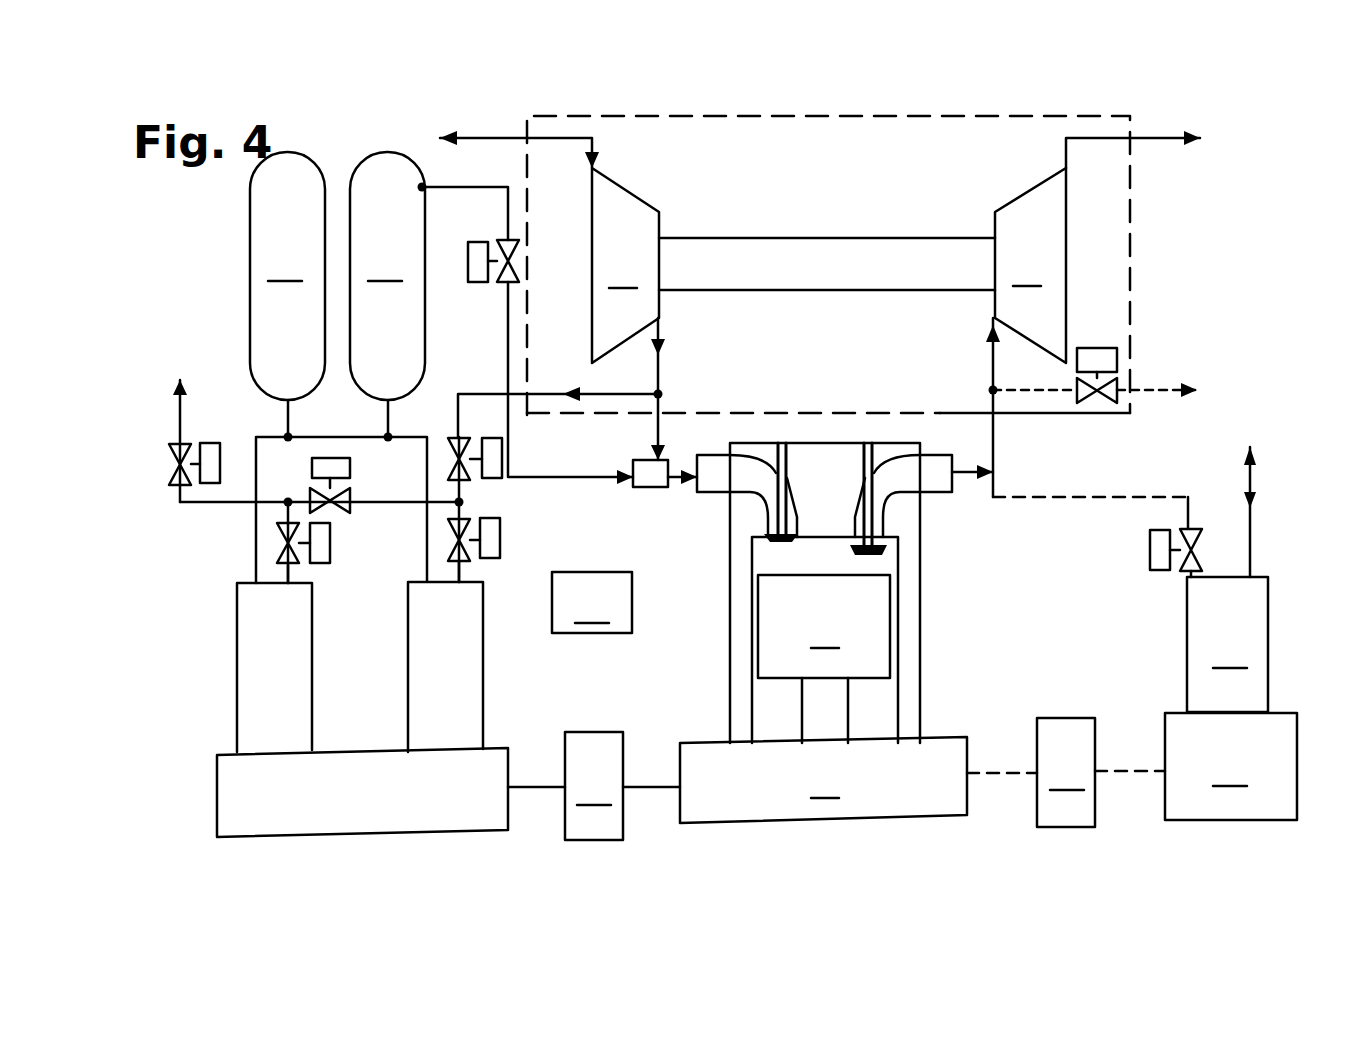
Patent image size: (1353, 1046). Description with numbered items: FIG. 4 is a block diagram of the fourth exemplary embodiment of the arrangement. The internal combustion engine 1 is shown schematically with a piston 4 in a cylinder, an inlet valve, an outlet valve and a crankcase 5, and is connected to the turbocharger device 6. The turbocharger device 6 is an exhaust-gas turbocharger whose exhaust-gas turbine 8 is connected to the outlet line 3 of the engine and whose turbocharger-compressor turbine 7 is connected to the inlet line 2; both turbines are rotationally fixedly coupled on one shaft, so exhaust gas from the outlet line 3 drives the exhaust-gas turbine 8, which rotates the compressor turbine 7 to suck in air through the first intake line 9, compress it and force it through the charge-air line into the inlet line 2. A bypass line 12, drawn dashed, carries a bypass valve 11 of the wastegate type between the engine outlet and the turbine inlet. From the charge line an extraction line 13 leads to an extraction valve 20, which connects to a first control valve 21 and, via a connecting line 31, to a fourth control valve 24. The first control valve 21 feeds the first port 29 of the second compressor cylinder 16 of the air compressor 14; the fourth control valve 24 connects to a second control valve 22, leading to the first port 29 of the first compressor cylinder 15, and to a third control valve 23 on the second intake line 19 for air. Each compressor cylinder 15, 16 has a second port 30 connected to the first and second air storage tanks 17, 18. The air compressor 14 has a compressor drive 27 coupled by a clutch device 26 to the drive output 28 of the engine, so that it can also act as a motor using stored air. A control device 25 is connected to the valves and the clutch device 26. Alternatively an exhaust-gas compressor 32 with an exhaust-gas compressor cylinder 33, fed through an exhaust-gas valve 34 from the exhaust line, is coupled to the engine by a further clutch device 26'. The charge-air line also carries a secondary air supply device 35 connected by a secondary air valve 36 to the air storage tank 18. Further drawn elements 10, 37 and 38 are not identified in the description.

The internal combustion engine 1 is at (920, 667).
The inlet line 2 is at (708, 493).
The outlet line 3 is at (940, 493).
The piston 4 is at (824, 659).
The crankcase 5 is at (823, 780).
The turbocharger device 6 is at (755, 113).
The turbocharger-compressor turbine 7 is at (625, 265).
The exhaust-gas turbine 8 is at (1030, 265).
The first intake line 9 is at (483, 138).
The exhaust outlet 10 is at (1147, 137).
The bypass valve 11 is at (1090, 348).
The bypass line 12 is at (1138, 392).
The extraction line 13 is at (620, 395).
The air compressor 14 is at (242, 790).
The first compressor cylinder 15 is at (255, 640).
The second compressor cylinder 16 is at (432, 713).
The first air storage tank 17 is at (287, 294).
The second air storage tank 18 is at (387, 294).
The second intake line 19 is at (175, 418).
The extraction valve 20 is at (488, 442).
The first control valve 21 is at (492, 557).
The second control valve 22 is at (320, 550).
The third control valve 23 is at (207, 443).
The fourth control valve 24 is at (350, 468).
The control device 25 is at (592, 602).
The clutch device 26 is at (594, 786).
The further clutch device 26' is at (1066, 772).
The compressor drive 27 is at (533, 762).
The drive output 28 is at (640, 782).
The first port 29 is at (288, 576).
The second port 30 is at (255, 525).
The connecting line 31 is at (380, 505).
The exhaust-gas compressor 32 is at (1231, 766).
The exhaust-gas compressor cylinder 33 is at (1236, 563).
The exhaust-gas valve 34 is at (1160, 563).
The secondary air supply device 35 is at (652, 482).
The secondary air valve 36 is at (462, 233).
The line 37 is at (592, 480).
The exhaust gas line 38 is at (1062, 498).